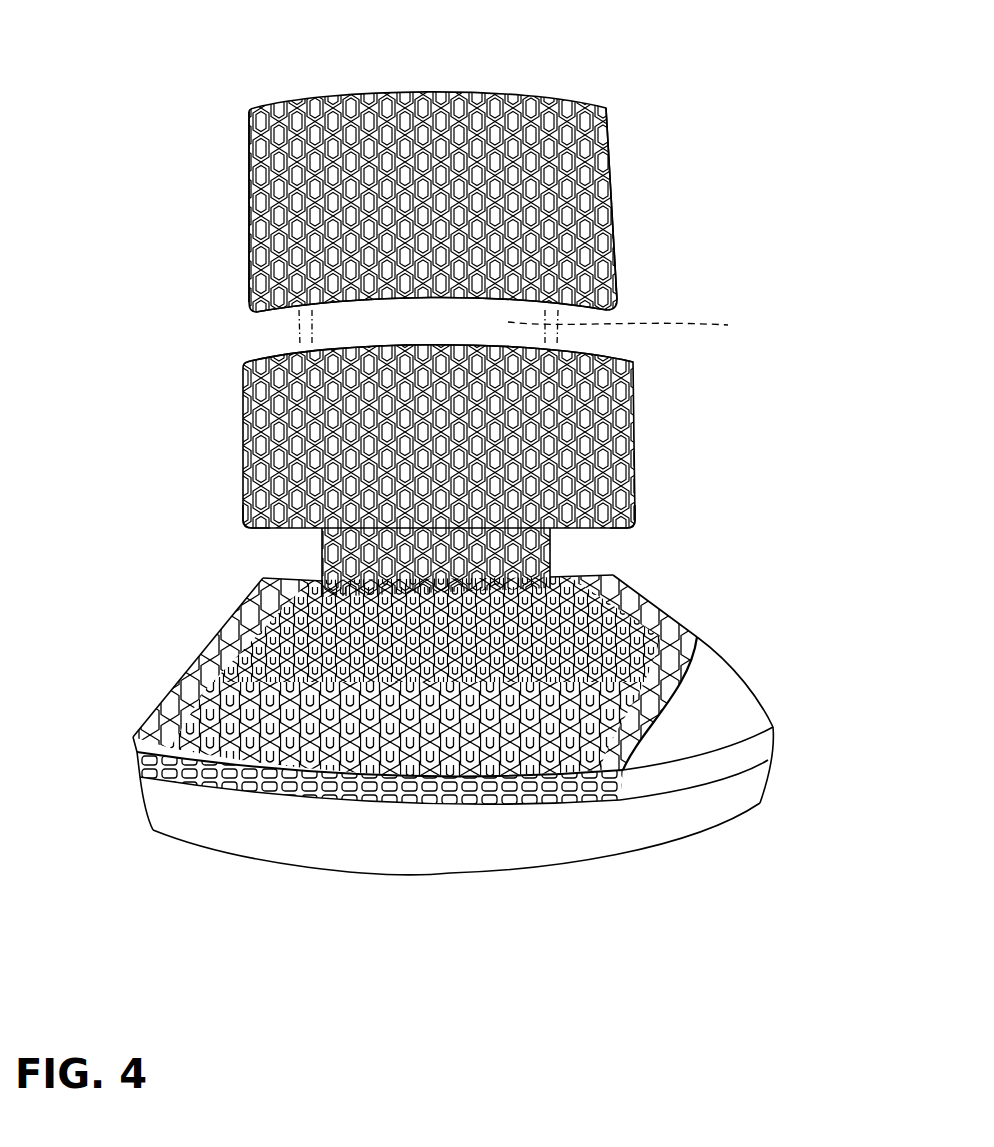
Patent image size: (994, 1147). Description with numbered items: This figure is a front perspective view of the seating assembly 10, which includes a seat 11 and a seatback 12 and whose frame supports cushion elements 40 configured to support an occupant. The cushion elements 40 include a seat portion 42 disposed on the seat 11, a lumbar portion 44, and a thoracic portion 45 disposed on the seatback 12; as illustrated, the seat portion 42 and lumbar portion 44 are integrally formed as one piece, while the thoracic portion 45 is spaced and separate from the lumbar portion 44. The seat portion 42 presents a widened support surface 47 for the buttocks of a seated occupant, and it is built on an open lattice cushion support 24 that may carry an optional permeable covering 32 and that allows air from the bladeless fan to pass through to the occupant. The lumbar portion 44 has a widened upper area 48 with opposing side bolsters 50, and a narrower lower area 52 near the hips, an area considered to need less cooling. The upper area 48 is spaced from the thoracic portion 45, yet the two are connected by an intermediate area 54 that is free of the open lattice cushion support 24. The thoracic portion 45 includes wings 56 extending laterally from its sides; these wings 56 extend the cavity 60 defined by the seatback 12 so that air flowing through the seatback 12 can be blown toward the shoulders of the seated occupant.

The seating assembly 10 is at (703, 98).
The thoracic portion 45 is at (290, 218).
The wings 56 is at (615, 190).
The seatback 12 is at (615, 305).
The intermediate area 54 is at (448, 331).
The cavity 60 is at (634, 323).
The upper area 48 is at (625, 372).
The lumbar portion 44 is at (290, 425).
The cushion elements 40 is at (710, 540).
The side bolsters 50 is at (613, 527).
The lower area 52 is at (550, 565).
The seat portion 42 is at (215, 662).
The widened support surface 47 is at (233, 705).
The open lattice cushion support 24 is at (203, 748).
The permeable covering 32 is at (715, 707).
The seat 11 is at (685, 818).